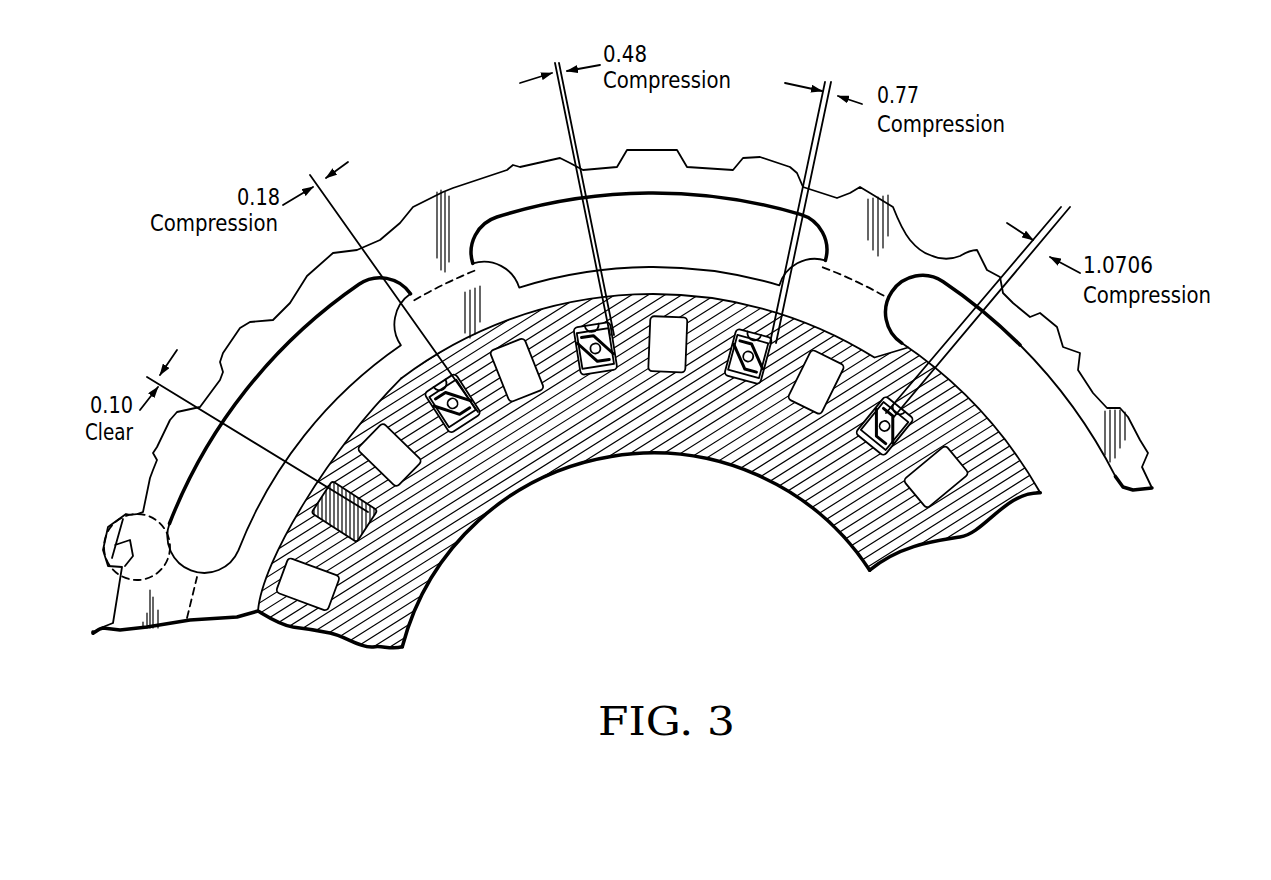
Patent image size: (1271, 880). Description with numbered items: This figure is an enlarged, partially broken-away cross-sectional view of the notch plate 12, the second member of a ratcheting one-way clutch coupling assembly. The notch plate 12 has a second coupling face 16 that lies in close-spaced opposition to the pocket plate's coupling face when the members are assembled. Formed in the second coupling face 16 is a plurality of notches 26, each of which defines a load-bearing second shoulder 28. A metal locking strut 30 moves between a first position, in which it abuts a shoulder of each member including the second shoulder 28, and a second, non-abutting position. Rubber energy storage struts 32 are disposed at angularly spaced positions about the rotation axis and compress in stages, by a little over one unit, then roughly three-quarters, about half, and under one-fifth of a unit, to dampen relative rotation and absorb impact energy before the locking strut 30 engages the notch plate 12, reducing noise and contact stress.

The notch plate 12 is at (880, 193).
The second coupling face 16 is at (920, 525).
The notch 26 is at (588, 327).
The second shoulder 28 is at (633, 347).
The locking strut 30 is at (348, 513).
The energy storage strut 32 is at (624, 345).